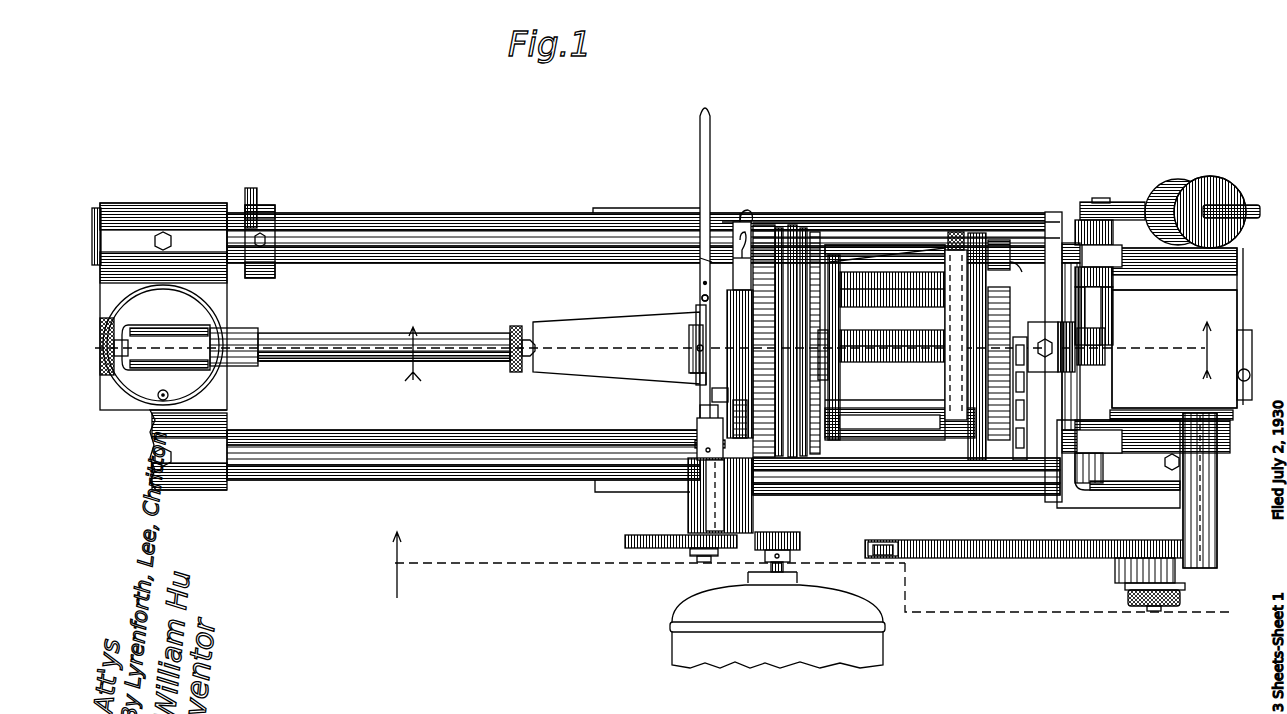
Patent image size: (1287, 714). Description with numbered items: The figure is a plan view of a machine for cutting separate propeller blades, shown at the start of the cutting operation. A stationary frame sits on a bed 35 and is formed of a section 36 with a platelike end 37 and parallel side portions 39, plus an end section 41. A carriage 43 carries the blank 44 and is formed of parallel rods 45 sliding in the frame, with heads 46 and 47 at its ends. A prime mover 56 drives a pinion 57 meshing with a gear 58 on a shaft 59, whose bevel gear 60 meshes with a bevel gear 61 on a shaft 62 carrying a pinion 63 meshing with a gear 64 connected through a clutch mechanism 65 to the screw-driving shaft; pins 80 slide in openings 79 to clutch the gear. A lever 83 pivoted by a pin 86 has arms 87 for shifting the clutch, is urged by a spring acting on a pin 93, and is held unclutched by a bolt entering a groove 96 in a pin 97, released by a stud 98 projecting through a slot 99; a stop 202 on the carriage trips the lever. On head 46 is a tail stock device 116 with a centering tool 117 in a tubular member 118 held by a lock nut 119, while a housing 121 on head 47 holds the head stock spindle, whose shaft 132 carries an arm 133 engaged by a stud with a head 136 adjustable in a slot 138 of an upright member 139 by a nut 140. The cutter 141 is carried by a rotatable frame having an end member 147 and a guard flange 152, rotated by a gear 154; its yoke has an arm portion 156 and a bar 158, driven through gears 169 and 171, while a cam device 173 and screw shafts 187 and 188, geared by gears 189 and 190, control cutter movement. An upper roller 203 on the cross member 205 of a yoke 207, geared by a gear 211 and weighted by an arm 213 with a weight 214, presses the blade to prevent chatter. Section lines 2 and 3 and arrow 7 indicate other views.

The section line 2 is at (635, 565).
The section line 3 is at (419, 354).
The direction arrow 7 is at (1214, 350).
The bed 35 is at (613, 208).
The frame section 36 is at (897, 218).
The platelike end portion 37 is at (766, 226).
The side portions 39 is at (866, 222).
The end section 41 is at (746, 516).
The carriage 43 is at (250, 412).
The blank 44 is at (600, 361).
The rods 45 is at (339, 230).
The carriage head 46 is at (236, 330).
The carriage head 47 is at (1154, 378).
The prime mover 56 is at (685, 645).
The pinion 57 is at (800, 546).
The gear 58 is at (625, 546).
The shaft 59 is at (704, 562).
The bevel gear 60 is at (712, 442).
The bevel gear 61 is at (713, 394).
The shaft 62 is at (700, 412).
The pinion 63 is at (696, 452).
The gear 64 is at (733, 292).
The clutch mechanism 65 is at (742, 420).
The openings 79 is at (697, 312).
The pins 80 is at (700, 370).
The lever 83 is at (712, 157).
The pin 86 is at (701, 296).
The arms 87 is at (691, 344).
The pin 93 is at (700, 262).
The groove 96 is at (745, 210).
The pin 97 is at (722, 214).
The stud 98 is at (740, 270).
The slot 99 is at (744, 283).
The tail stock device 116 is at (319, 334).
The centering tool 117 is at (526, 360).
The tubular member 118 is at (390, 362).
The lock nut 119 is at (514, 326).
The housing 121 is at (1174, 349).
The shaft 132 is at (1232, 515).
The arm 133 is at (1000, 546).
The head 136 is at (1128, 580).
The slot 138 is at (1035, 300).
The upwardly extending member 139 is at (1130, 565).
The nut 140 is at (1130, 600).
The cutter 141 is at (1020, 463).
The end member 147 is at (977, 232).
The guard flange 152 is at (918, 262).
The gear 154 is at (780, 222).
The arm portion 156 is at (992, 280).
The bar 158 is at (885, 422).
The gear 169 is at (805, 228).
The gear 171 is at (792, 226).
The cam device 173 is at (863, 403).
The screw shaft 187 is at (882, 304).
The screw shaft 188 is at (940, 342).
The gear 189 is at (828, 375).
The gear 190 is at (836, 260).
The stop 202 is at (251, 188).
The upper roller 203 is at (1106, 344).
The cross member 205 is at (1096, 298).
The yoke 207 is at (1114, 283).
The gear 211 is at (1114, 240).
The arm 213 is at (1122, 204).
The weight 214 is at (1182, 180).